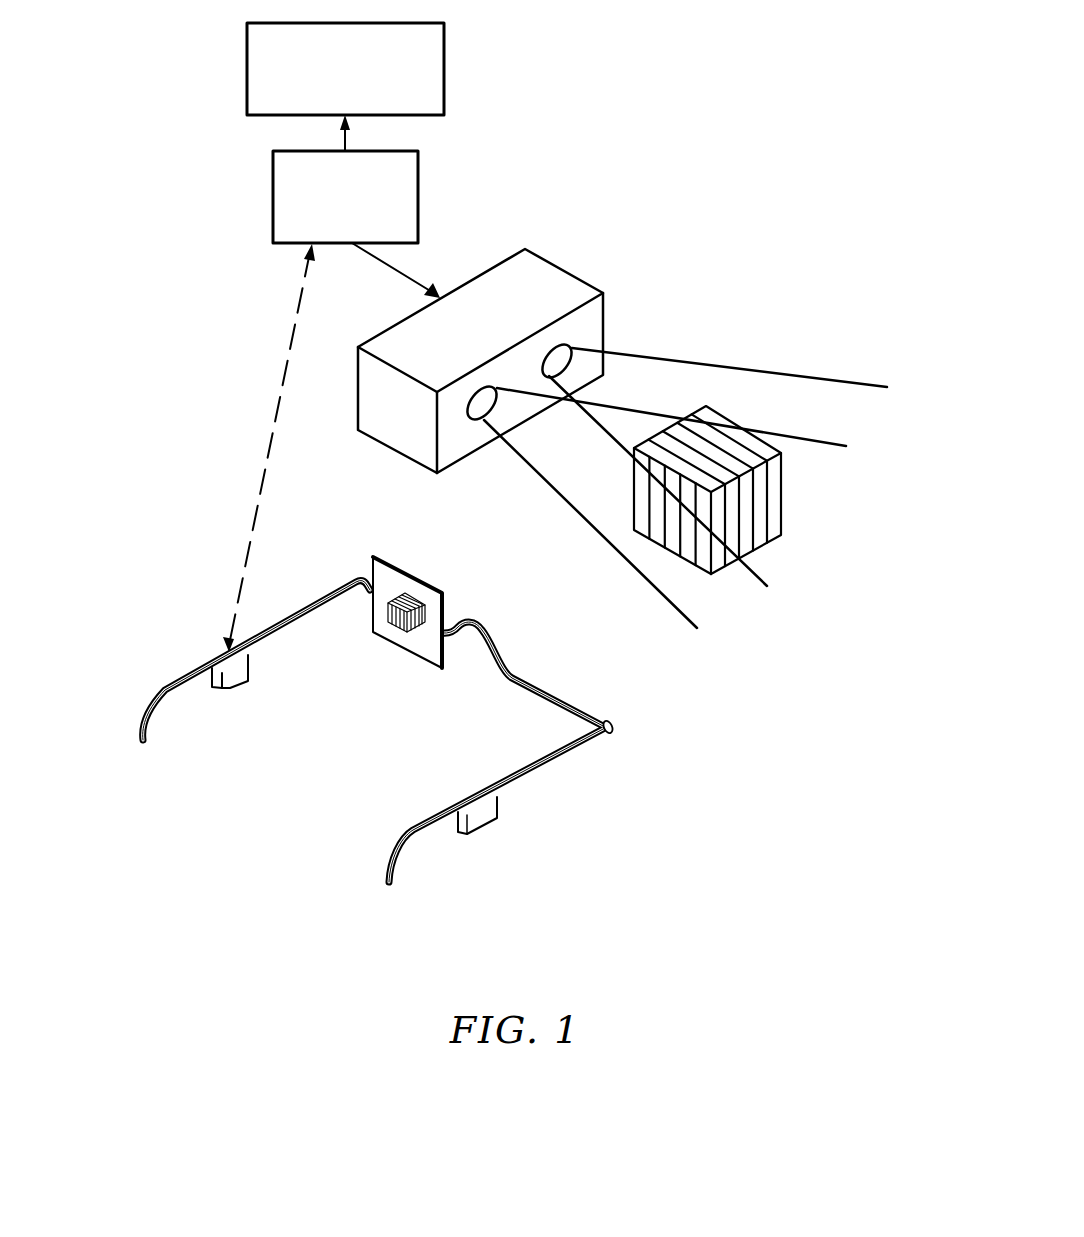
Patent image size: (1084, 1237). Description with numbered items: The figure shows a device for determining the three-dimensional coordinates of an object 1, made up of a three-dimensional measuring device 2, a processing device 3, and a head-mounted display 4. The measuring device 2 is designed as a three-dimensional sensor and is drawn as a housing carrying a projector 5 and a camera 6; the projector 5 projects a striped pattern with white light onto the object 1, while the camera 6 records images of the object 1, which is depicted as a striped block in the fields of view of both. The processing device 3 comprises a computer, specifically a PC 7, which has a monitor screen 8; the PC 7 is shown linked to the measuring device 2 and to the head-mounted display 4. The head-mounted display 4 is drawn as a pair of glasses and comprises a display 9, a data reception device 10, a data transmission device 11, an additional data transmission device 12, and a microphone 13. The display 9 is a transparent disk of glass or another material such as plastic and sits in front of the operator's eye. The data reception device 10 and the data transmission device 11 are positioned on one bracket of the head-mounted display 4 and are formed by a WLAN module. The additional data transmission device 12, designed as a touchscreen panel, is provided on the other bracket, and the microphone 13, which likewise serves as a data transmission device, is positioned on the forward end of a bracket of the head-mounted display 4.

The object 1 is at (774, 497).
The 3D measuring device 2 is at (613, 254).
The processing device 3 is at (492, 146).
The head-mounted display 4 is at (505, 842).
The projector 5 is at (483, 412).
The camera 6 is at (563, 356).
The PC 7 is at (418, 200).
The monitor screen 8 is at (445, 70).
The display 9 is at (432, 655).
The data reception device 10 is at (225, 677).
The data transmission device 11 is at (240, 667).
The additional data transmission device 12 is at (477, 817).
The microphone 13 is at (613, 733).